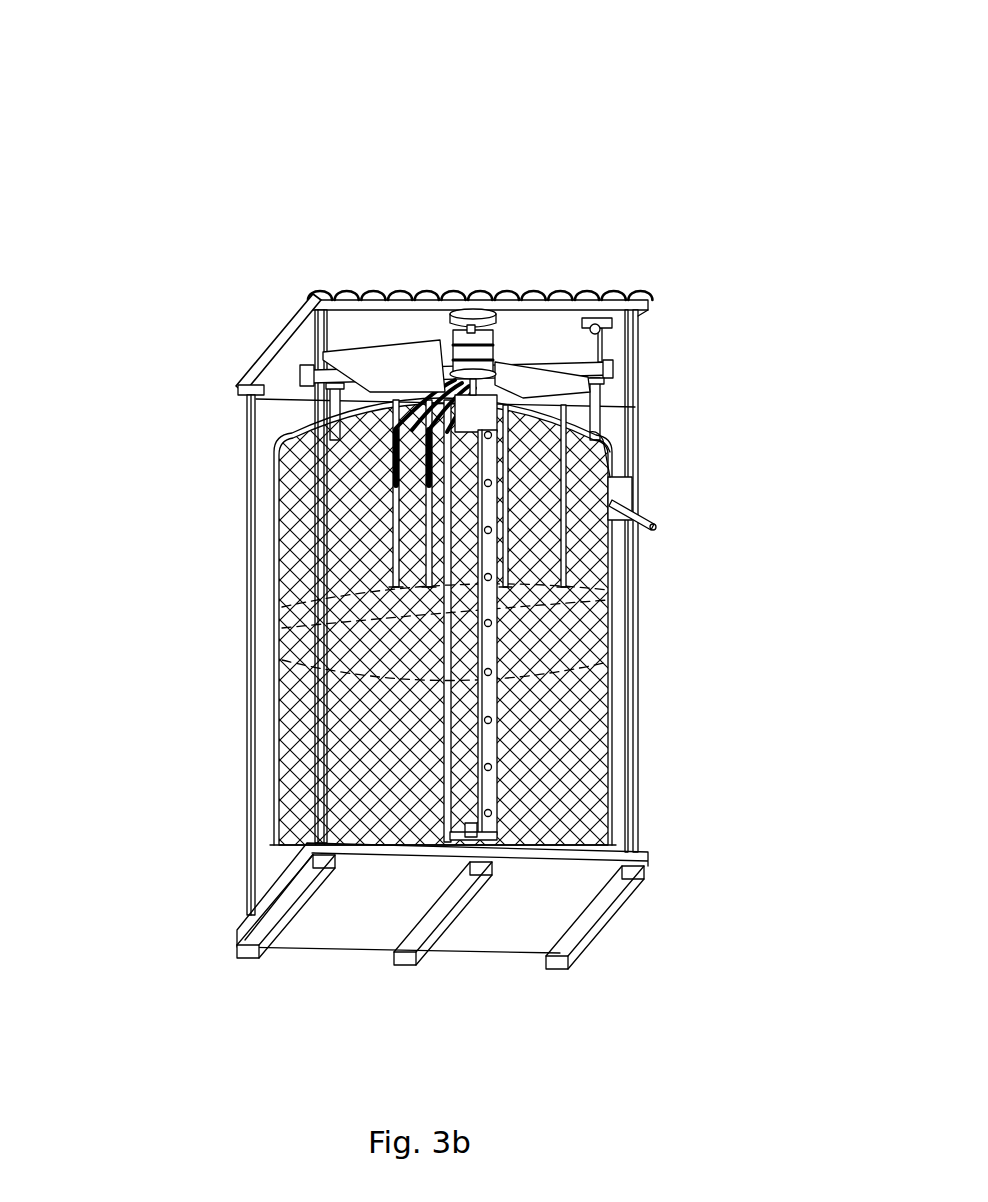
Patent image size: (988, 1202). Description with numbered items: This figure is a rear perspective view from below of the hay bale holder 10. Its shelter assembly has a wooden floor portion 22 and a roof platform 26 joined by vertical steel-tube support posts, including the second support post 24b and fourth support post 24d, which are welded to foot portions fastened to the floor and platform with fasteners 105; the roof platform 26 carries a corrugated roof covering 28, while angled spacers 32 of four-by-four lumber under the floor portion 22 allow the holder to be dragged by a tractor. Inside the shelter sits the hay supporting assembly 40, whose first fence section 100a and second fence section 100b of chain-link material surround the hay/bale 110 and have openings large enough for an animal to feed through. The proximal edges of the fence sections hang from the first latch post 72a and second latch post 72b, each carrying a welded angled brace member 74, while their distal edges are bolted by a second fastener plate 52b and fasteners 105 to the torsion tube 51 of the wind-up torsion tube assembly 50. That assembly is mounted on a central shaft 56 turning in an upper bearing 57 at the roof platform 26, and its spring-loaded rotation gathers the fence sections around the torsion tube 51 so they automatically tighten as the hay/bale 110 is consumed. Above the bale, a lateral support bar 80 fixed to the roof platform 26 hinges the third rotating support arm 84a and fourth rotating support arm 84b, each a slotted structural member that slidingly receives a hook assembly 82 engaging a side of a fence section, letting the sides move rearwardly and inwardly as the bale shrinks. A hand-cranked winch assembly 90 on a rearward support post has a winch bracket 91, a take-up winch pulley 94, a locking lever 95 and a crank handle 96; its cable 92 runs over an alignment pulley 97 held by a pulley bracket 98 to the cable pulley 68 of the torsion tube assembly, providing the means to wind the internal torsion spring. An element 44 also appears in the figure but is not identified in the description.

The hay bale holder 10 is at (95, 153).
The wooden floor portion 22 is at (535, 913).
The second support post 24b is at (247, 533).
The fourth support post 24d is at (244, 830).
The roof platform 26 is at (392, 326).
The roof covering 28 is at (532, 293).
The spacers 32 is at (260, 957).
The hay supporting assembly 40 is at (647, 597).
The screen assembly 44 is at (622, 655).
The wind-up torsion tube assembly 50 is at (325, 645).
The torsion tube 51 is at (468, 790).
The second fastener plate 52b is at (505, 795).
The shaft 56 is at (465, 335).
The upper bearing 57 is at (488, 312).
The cable pulley 68 is at (455, 335).
The first latch post 72a is at (428, 590).
The second latch post 72b is at (395, 536).
The angled brace member 74 is at (393, 437).
The lateral support bar 80 is at (302, 372).
The hook assembly 82 is at (335, 402).
The third rotating support arm 84a is at (355, 358).
The fourth rotating support arm 84b is at (617, 362).
The winch assembly 90 is at (618, 497).
The winch bracket 91 is at (632, 482).
The cable 92 is at (603, 345).
The winch pulley 94 is at (637, 530).
The locking lever 95 is at (637, 440).
The handle 96 is at (657, 528).
The alignment pulley 97 is at (598, 312).
The pulley bracket 98 is at (613, 308).
The first fence section 100a is at (555, 665).
The second fence section 100b is at (300, 758).
The fastener 105 is at (455, 772).
The hay/bale 110 is at (283, 638).